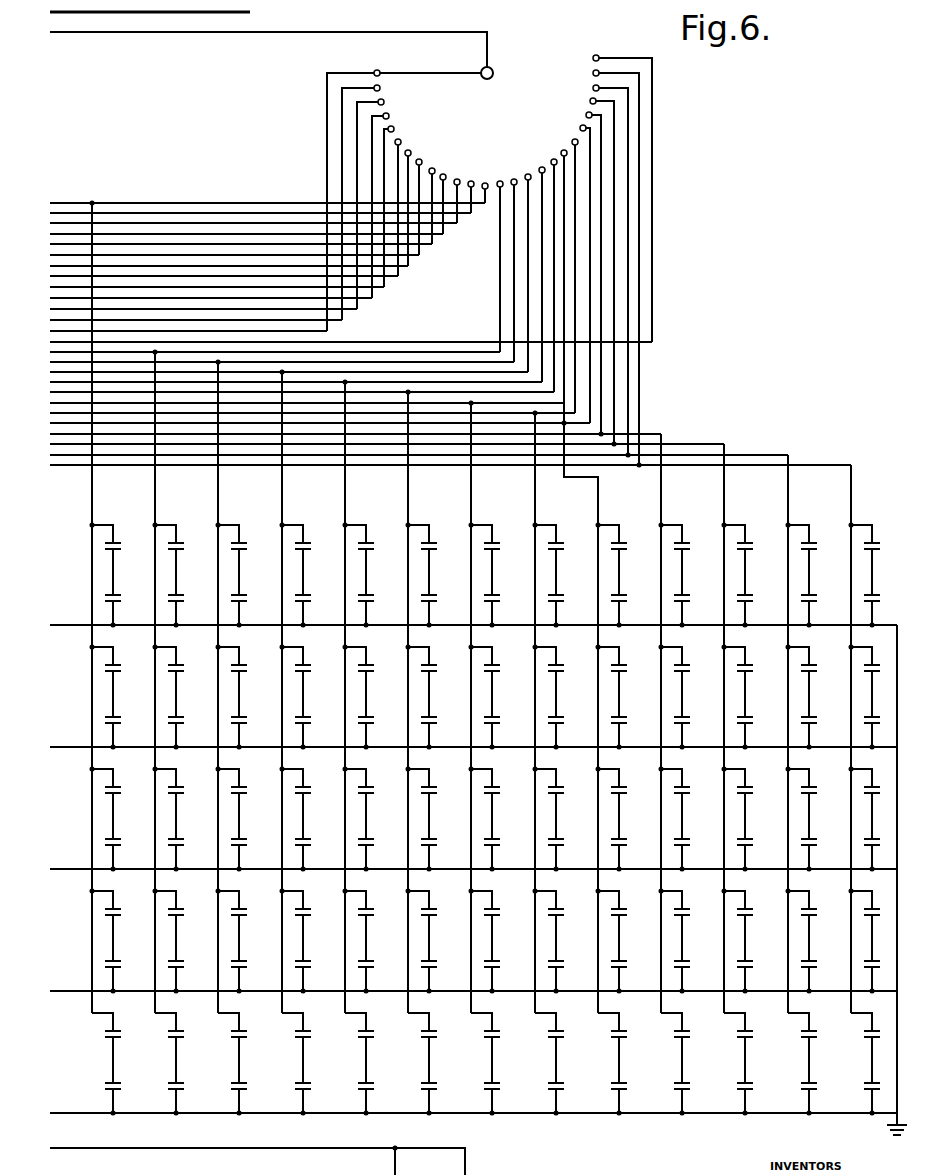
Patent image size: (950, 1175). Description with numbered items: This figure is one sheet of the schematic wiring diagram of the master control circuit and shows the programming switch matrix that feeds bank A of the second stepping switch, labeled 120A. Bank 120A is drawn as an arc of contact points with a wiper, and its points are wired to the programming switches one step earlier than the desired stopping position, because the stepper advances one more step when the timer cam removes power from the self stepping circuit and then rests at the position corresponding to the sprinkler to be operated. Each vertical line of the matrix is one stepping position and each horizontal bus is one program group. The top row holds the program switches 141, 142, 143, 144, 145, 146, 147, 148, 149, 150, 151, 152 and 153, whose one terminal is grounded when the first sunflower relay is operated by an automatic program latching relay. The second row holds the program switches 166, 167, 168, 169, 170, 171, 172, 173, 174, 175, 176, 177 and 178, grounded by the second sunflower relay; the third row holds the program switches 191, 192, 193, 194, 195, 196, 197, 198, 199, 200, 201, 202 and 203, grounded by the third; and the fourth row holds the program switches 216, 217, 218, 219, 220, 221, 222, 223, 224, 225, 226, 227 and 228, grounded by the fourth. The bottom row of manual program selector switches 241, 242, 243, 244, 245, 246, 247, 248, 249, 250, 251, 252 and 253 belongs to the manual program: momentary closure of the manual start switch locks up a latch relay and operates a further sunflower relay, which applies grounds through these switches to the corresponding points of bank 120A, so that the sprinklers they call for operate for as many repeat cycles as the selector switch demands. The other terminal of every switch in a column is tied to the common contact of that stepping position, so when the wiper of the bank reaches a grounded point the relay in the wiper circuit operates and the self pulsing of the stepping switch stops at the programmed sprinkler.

The stepping switch bank A 120A is at (525, 118).
The program switch 141 is at (121, 542).
The program switch 142 is at (184, 542).
The program switch 143 is at (247, 542).
The program switch 144 is at (311, 542).
The program switch 145 is at (374, 542).
The program switch 146 is at (437, 542).
The program switch 147 is at (500, 542).
The program switch 148 is at (564, 542).
The program switch 149 is at (627, 542).
The program switch 150 is at (690, 542).
The program switch 151 is at (753, 542).
The program switch 152 is at (817, 542).
The program switch 153 is at (880, 542).
The program switch 166 is at (120, 666).
The program switch 167 is at (183, 666).
The program switch 168 is at (246, 666).
The program switch 169 is at (310, 666).
The program switch 170 is at (373, 666).
The program switch 171 is at (436, 666).
The program switch 172 is at (499, 666).
The program switch 173 is at (563, 666).
The program switch 174 is at (626, 666).
The program switch 175 is at (689, 666).
The program switch 176 is at (752, 666).
The program switch 177 is at (816, 666).
The program switch 178 is at (880, 661).
The program switch 191 is at (120, 788).
The program switch 192 is at (183, 788).
The program switch 193 is at (246, 788).
The program switch 194 is at (310, 788).
The program switch 195 is at (373, 788).
The program switch 196 is at (436, 788).
The program switch 197 is at (499, 788).
The program switch 198 is at (563, 788).
The program switch 199 is at (626, 788).
The program switch 200 is at (689, 788).
The program switch 201 is at (752, 788).
The program switch 202 is at (816, 788).
The program switch 203 is at (878, 794).
The program switch 216 is at (120, 910).
The program switch 217 is at (183, 910).
The program switch 218 is at (246, 910).
The program switch 219 is at (310, 910).
The program switch 220 is at (373, 910).
The program switch 221 is at (436, 910).
The program switch 222 is at (499, 910).
The program switch 223 is at (563, 910).
The program switch 224 is at (626, 910).
The program switch 225 is at (689, 910).
The program switch 226 is at (752, 910).
The program switch 227 is at (816, 910).
The program switch 228 is at (878, 917).
The manual program selector switch 241 is at (125, 1043).
The manual program selector switch 242 is at (188, 1043).
The manual program selector switch 243 is at (251, 1043).
The manual program selector switch 244 is at (315, 1043).
The manual program selector switch 245 is at (378, 1043).
The manual program selector switch 246 is at (441, 1043).
The manual program selector switch 247 is at (504, 1043).
The manual program selector switch 248 is at (568, 1043).
The manual program selector switch 249 is at (631, 1043).
The manual program selector switch 250 is at (694, 1043).
The manual program selector switch 251 is at (757, 1043).
The manual program selector switch 252 is at (817, 1042).
The manual program selector switch 253 is at (870, 1068).